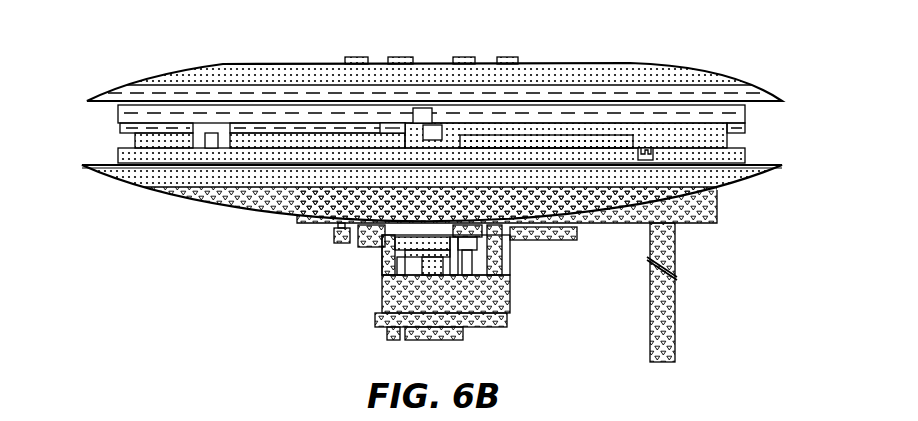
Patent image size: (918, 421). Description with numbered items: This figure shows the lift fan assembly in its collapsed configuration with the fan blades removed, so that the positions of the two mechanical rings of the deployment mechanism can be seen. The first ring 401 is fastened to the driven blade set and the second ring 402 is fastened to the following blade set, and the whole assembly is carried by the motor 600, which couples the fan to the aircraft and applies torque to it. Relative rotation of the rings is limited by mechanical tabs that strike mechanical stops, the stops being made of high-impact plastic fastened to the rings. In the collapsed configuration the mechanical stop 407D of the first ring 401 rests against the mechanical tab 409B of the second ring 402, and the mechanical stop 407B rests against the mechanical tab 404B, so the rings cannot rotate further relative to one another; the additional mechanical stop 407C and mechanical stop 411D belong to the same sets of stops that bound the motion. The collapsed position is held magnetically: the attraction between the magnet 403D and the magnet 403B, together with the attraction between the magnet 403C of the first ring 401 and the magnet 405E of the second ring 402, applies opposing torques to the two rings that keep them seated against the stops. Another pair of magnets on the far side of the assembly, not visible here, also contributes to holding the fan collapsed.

The first ring 401 is at (717, 134).
The second ring 402 is at (130, 113).
The magnet 403B is at (424, 108).
The magnet 403C is at (222, 150).
The magnet 403D is at (428, 140).
The mechanical tab 404B is at (458, 138).
The magnet 405E is at (213, 134).
The mechanical stop 407B is at (275, 128).
The mechanical stop 407C is at (590, 148).
The mechanical stop 407D is at (299, 143).
The mechanical tab 409B is at (198, 142).
The mechanical stop 411D is at (120, 128).
The motor 600 is at (390, 292).